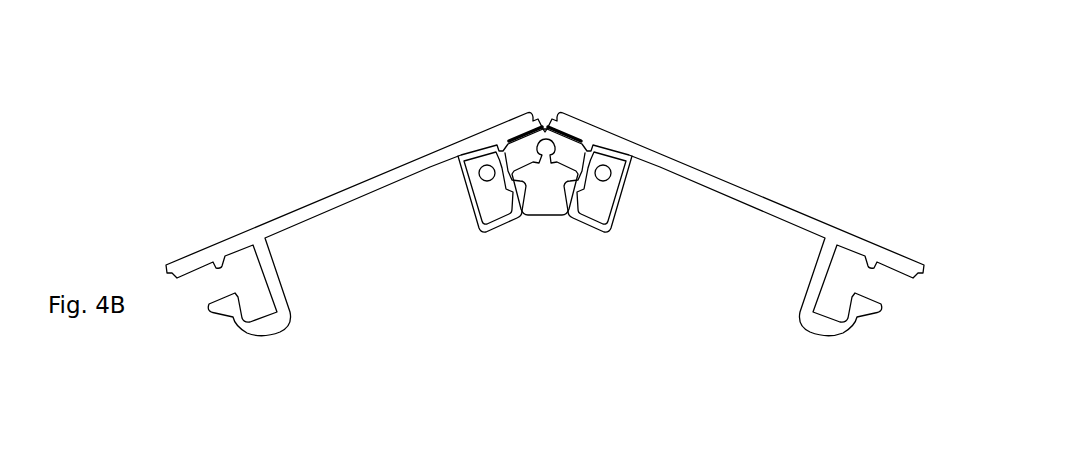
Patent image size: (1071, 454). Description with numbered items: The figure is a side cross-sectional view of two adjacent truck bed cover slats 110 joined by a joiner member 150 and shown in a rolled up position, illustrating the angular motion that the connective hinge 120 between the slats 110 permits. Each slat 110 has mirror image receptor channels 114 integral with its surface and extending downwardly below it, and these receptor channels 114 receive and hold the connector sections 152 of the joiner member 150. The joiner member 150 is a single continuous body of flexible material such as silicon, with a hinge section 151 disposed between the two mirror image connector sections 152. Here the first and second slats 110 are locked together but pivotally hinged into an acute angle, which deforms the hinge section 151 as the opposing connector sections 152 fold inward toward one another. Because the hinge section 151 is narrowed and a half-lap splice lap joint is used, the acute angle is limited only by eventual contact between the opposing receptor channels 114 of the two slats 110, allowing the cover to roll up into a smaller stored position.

The slat 110 is at (380, 167).
The receptor channel 114 is at (466, 188).
The connective hinge 120 is at (539, 100).
The joiner member 150 is at (541, 171).
The hinge section 151 is at (545, 127).
The connector section 152 is at (478, 197).